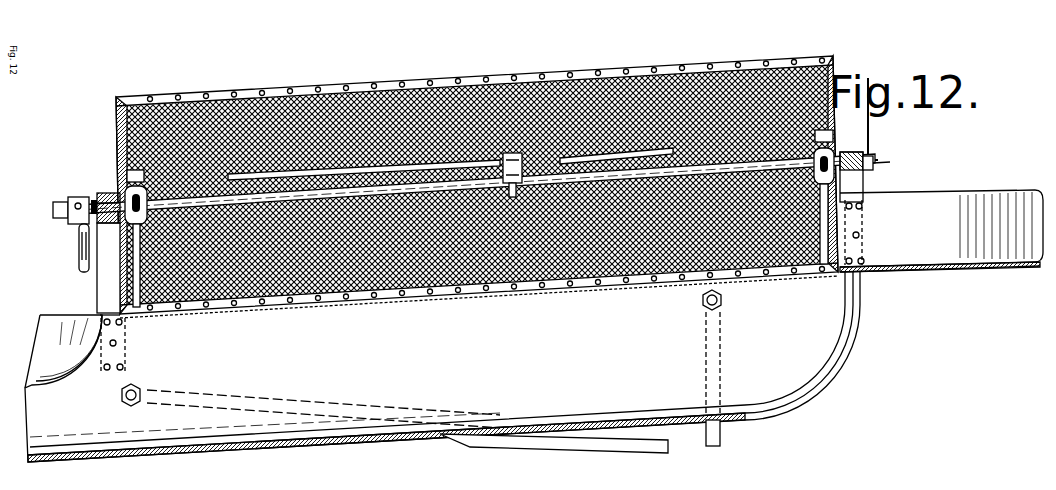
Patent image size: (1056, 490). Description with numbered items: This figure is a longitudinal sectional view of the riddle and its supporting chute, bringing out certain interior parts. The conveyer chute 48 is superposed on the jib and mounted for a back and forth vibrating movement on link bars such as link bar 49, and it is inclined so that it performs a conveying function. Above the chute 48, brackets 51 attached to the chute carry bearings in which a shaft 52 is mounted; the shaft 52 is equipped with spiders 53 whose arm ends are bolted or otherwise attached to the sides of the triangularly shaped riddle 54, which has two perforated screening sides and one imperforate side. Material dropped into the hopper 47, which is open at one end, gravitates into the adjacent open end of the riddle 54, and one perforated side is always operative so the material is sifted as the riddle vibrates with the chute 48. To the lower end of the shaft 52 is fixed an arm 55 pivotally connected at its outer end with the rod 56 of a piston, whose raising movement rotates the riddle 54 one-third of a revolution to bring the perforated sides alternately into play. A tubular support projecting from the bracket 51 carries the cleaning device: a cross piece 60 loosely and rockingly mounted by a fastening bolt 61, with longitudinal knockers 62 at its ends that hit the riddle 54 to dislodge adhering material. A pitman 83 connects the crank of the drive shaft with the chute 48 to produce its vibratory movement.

The hopper 47 is at (955, 207).
The conveyer chute 48 is at (790, 370).
The link bar 49 is at (722, 433).
The bracket 51 is at (100, 270).
The shaft 52 is at (75, 206).
The spider 53 is at (145, 277).
The riddle 54 is at (658, 100).
The arm 55 is at (72, 220).
The rod 56 is at (80, 248).
The cross piece 60 is at (505, 150).
The fastening bolt 61 is at (512, 152).
The knocker 62 is at (292, 174).
The pitman 83 is at (598, 440).